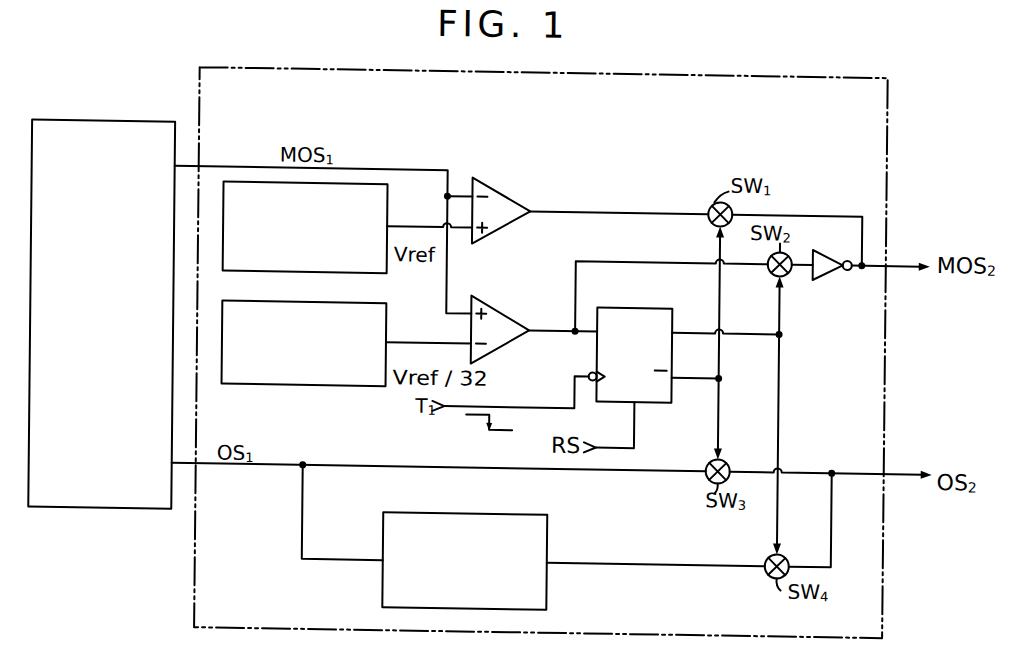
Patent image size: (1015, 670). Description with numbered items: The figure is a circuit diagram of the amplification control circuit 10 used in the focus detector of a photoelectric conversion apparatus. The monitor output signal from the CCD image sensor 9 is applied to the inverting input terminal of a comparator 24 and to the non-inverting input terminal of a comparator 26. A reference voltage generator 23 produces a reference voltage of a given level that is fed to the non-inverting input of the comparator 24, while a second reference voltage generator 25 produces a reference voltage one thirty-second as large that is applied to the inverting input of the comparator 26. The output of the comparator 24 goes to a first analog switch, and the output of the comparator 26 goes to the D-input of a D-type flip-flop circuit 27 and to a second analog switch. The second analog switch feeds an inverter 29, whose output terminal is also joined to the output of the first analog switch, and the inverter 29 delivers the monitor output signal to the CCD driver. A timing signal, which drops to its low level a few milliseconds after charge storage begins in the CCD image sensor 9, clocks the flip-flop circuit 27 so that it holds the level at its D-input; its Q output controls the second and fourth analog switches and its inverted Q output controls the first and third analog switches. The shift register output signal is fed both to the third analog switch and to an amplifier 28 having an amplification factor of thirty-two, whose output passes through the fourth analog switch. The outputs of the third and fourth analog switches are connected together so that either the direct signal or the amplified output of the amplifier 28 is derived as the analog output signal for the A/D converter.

The CCD image sensor 9 is at (148, 134).
The amplification control circuit 10 is at (749, 72).
The reference voltage generator 23 is at (268, 266).
The comparator 24 is at (501, 204).
The reference voltage generator 25 is at (266, 386).
The comparator 26 is at (501, 320).
The D-type flip-flop circuit 27 is at (653, 311).
The amplifier 28 is at (514, 520).
The inverter 29 is at (821, 262).